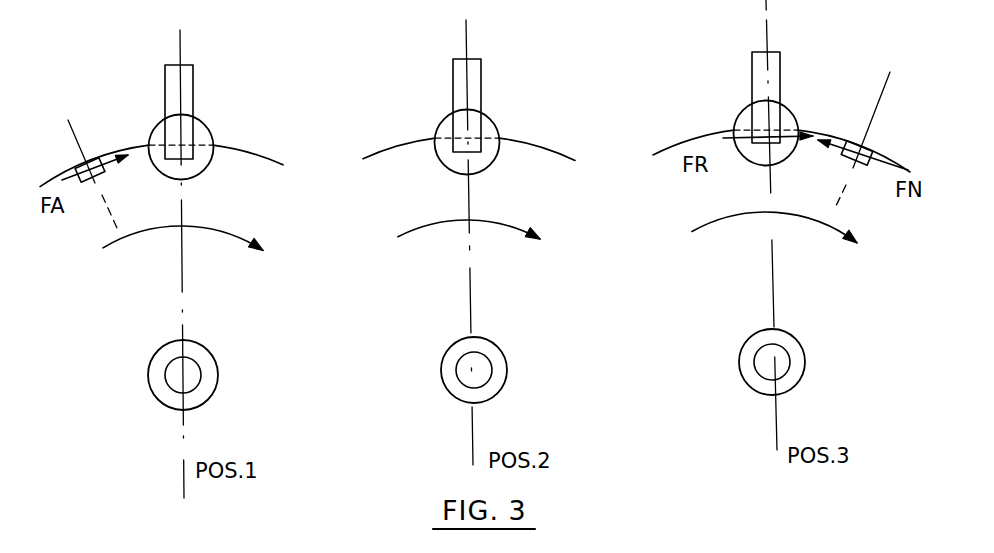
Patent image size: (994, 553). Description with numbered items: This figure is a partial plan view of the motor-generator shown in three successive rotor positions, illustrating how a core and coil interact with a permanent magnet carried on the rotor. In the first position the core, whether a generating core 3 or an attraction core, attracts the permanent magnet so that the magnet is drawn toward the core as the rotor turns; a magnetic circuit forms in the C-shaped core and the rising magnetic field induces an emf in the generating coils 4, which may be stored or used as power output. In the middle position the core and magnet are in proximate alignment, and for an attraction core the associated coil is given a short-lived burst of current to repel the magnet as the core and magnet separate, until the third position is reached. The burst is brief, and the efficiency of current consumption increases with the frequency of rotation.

The generating cores 3 is at (192, 64).
The generating coils 4 is at (198, 142).